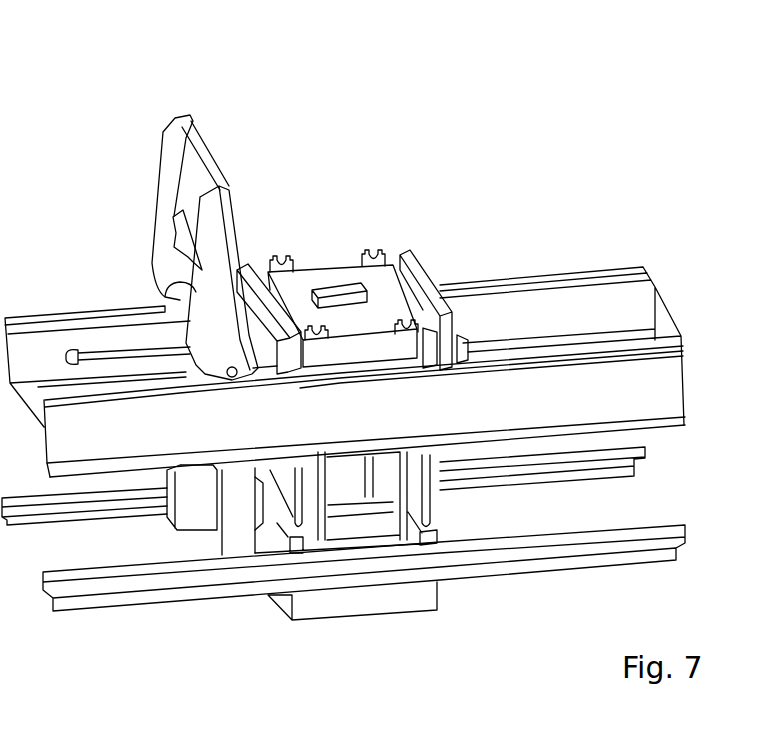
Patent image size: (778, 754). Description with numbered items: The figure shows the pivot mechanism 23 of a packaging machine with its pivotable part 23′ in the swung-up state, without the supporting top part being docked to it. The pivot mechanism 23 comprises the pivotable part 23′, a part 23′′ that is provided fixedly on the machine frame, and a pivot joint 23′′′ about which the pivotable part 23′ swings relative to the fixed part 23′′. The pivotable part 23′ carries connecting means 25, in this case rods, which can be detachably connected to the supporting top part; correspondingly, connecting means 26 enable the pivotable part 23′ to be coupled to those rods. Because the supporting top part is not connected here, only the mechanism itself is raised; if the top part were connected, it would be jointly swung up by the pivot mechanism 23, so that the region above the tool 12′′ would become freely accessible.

The pivot mechanism 23 is at (80, 133).
The pivotable part 23′ is at (168, 153).
The connecting means 25 is at (198, 148).
The connecting means 26 is at (274, 258).
The tool 12′′ is at (330, 275).
The part provided fixedly on the machine frame 23′′ is at (180, 300).
The pivot joint 23′′′ is at (233, 377).